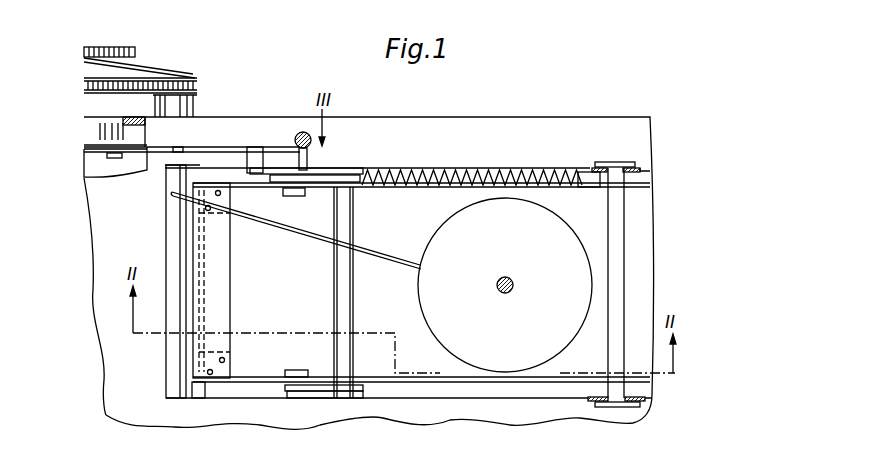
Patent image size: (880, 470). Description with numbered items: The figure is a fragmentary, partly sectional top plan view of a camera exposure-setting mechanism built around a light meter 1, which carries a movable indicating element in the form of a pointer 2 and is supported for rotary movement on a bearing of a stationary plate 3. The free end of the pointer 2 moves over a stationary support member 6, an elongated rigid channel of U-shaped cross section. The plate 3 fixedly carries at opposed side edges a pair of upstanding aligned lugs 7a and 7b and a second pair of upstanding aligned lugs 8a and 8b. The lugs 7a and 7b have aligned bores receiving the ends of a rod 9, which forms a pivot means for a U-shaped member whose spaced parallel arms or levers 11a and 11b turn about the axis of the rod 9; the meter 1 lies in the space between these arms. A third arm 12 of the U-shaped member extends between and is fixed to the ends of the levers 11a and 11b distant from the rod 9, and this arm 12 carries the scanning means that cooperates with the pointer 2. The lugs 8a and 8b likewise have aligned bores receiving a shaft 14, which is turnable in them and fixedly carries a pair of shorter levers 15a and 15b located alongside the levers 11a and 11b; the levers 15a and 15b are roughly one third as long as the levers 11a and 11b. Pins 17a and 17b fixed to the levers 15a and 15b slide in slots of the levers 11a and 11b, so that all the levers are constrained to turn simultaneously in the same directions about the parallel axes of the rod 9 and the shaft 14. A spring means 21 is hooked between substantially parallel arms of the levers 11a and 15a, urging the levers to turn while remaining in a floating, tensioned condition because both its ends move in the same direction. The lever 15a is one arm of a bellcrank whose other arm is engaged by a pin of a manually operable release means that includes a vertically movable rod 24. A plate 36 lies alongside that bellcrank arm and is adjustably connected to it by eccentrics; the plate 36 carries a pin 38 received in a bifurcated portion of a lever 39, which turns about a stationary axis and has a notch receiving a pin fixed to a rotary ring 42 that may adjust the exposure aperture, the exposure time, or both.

The light meter 1 is at (483, 362).
The pointer 2 is at (378, 252).
The stationary plate 3 is at (407, 388).
The support member 6 is at (180, 358).
The lug 7a is at (640, 167).
The lug 7b is at (640, 402).
The lug 8a is at (350, 167).
The lug 8b is at (352, 398).
The rod 9 is at (618, 300).
The arm 11a is at (450, 186).
The arm 11b is at (523, 382).
The third arm 12 is at (208, 257).
The shaft 14 is at (347, 302).
The lever 15a is at (325, 178).
The lever 15b is at (320, 391).
The pin 17a is at (290, 196).
The pin 17b is at (292, 370).
The spring means 21 is at (522, 183).
The rod 24 is at (305, 131).
The plate 36 is at (279, 165).
The pin 38 is at (257, 147).
The lever 39 is at (232, 150).
The rotary ring 42 is at (97, 178).